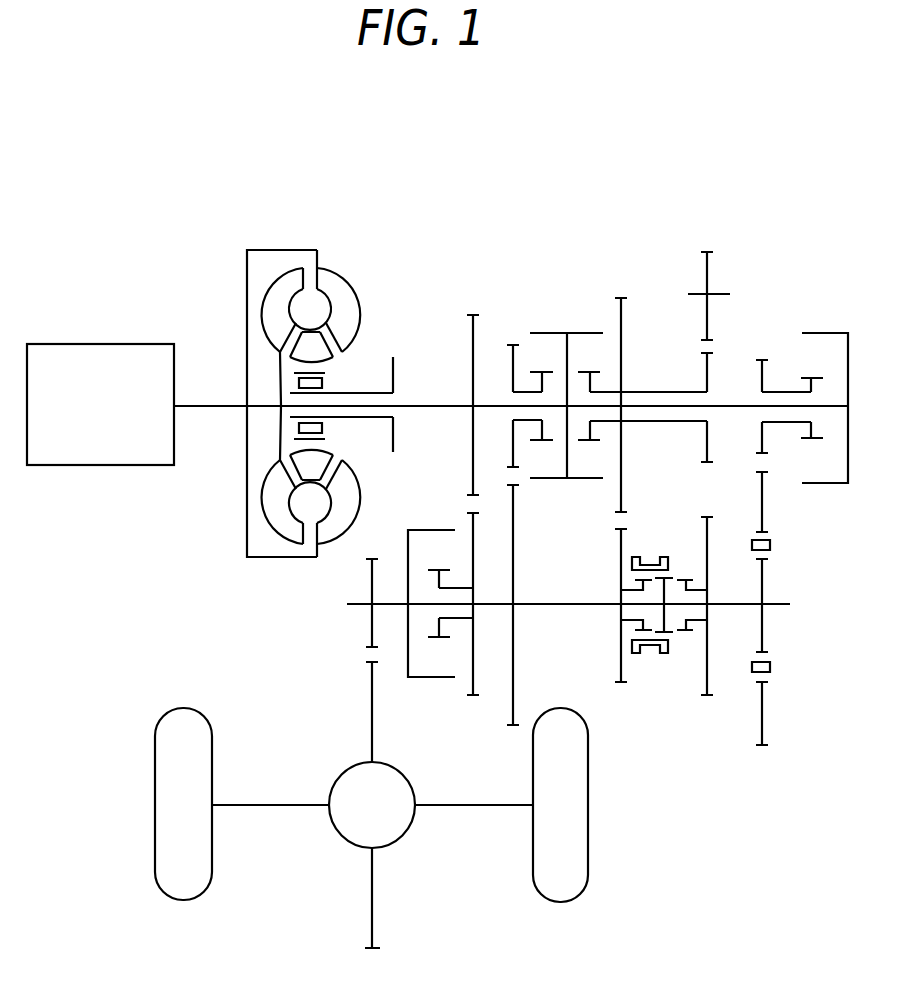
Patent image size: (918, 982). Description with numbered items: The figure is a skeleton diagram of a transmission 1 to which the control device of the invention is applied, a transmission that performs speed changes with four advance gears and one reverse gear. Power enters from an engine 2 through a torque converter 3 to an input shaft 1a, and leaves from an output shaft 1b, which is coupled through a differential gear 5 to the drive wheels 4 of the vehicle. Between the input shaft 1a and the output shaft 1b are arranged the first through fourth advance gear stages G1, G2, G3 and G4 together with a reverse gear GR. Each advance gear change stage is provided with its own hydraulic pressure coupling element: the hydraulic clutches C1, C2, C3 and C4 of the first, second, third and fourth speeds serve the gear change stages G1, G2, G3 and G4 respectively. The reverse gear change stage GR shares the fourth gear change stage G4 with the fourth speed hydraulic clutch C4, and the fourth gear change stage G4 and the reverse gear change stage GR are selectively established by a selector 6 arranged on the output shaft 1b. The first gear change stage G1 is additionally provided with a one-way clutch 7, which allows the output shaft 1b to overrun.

The transmission 1 is at (667, 271).
The input shaft 1a is at (428, 403).
The output shaft 1b is at (565, 606).
The engine 2 is at (92, 363).
The torque converter 3 is at (357, 267).
The drive wheels 4 is at (163, 785).
The differential gear 5 is at (347, 778).
The selector 6 is at (648, 653).
The one-way clutch 7 is at (772, 545).
The first advance gear stage G1 is at (762, 354).
The second advance gear stage G2 is at (513, 336).
The third advance gear stage G3 is at (473, 304).
The fourth advance gear stage G4 is at (621, 291).
The reverse gear GR is at (707, 247).
The first speed hydraulic clutch C1 is at (833, 333).
The second speed hydraulic clutch C2 is at (555, 479).
The third speed hydraulic clutch C3 is at (422, 530).
The fourth speed hydraulic clutch C4 is at (578, 333).